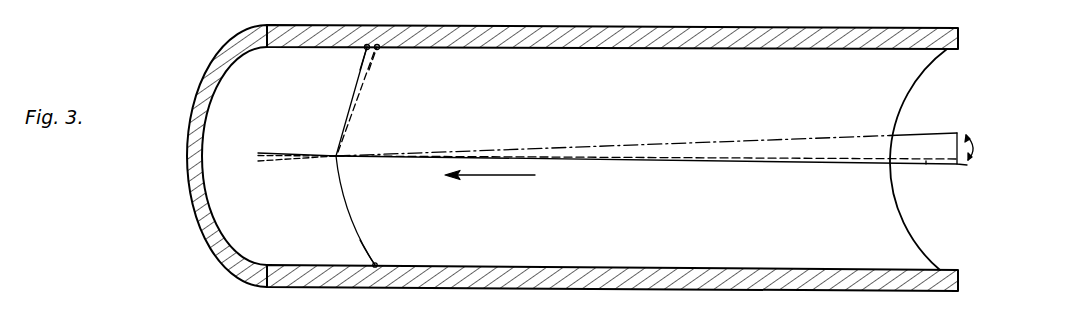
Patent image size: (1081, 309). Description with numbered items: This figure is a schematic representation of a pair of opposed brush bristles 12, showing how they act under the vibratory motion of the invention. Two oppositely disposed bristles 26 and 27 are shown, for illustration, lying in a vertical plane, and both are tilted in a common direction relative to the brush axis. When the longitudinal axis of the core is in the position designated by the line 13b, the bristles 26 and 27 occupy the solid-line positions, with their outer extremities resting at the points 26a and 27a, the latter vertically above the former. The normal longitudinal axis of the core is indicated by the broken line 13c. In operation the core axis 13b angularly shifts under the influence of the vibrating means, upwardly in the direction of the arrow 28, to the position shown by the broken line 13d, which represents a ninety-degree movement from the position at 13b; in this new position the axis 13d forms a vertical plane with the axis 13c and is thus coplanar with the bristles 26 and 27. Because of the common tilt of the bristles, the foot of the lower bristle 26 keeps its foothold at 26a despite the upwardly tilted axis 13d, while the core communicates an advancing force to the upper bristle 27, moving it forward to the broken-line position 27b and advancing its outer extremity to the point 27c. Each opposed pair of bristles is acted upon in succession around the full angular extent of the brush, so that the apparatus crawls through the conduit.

The bristles 12 is at (572, 167).
The core member axis position 13b is at (958, 166).
The normal longitudinal axis of the core 13c is at (926, 161).
The shifted core axis position 13d is at (938, 133).
The lower bristle 26 is at (348, 210).
The outer extremity point of bristle 26 26a is at (377, 263).
The upper bristle 27 is at (349, 110).
The outer extremity point of bristle 27 27a is at (378, 44).
The advanced position of bristle 27 27b is at (357, 81).
The advanced outer extremity point 27c is at (367, 44).
The arrow 28 is at (973, 147).